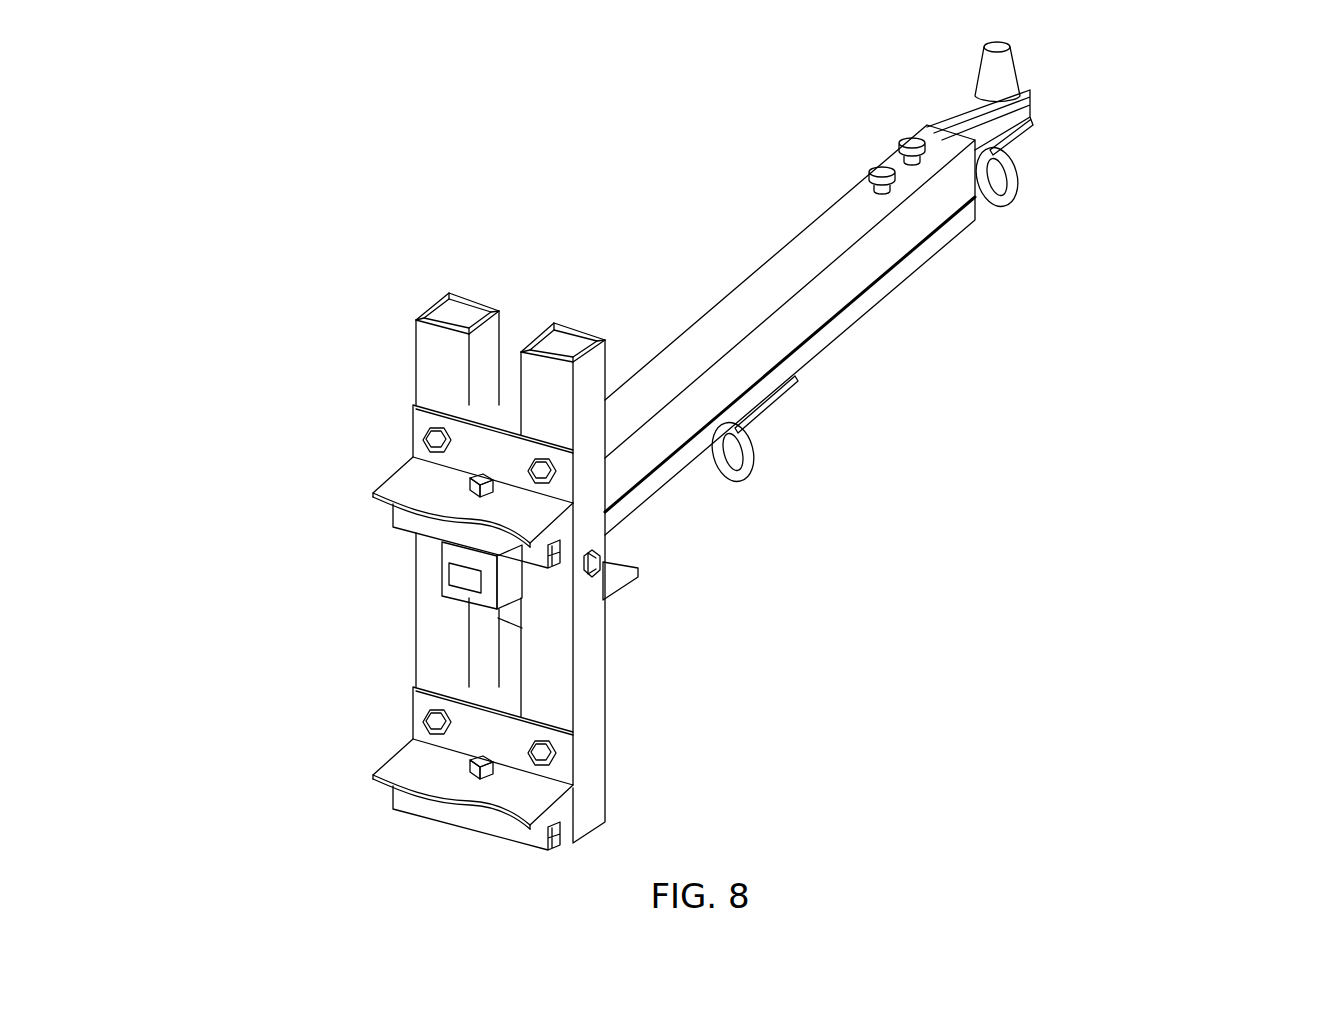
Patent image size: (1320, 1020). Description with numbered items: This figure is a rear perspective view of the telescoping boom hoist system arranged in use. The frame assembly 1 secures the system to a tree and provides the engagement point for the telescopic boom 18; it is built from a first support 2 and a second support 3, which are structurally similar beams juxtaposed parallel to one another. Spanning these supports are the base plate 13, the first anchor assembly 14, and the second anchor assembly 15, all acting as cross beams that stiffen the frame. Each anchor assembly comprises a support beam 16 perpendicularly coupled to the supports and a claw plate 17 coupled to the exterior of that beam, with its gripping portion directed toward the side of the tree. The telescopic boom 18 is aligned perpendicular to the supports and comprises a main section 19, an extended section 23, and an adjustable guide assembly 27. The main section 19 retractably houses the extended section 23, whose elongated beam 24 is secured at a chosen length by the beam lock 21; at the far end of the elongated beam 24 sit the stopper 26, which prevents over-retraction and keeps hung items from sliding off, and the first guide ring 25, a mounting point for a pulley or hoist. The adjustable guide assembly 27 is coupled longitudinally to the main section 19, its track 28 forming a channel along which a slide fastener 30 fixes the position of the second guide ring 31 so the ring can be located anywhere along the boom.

The frame assembly 1 is at (310, 605).
The first support 2 is at (437, 304).
The second support 3 is at (580, 327).
The base plate 13 is at (623, 560).
The first anchor assembly 14 is at (374, 446).
The second anchor assembly 15 is at (400, 722).
The support beam 16 is at (403, 527).
The claw plate 17 is at (384, 492).
The telescopic boom 18 is at (1074, 506).
The main section 19 is at (795, 258).
The beam lock 21 is at (912, 144).
The extended section 23 is at (1142, 110).
The elongated beam 24 is at (960, 110).
The first guide ring 25 is at (1020, 168).
The stopper 26 is at (1020, 74).
The adjustable guide assembly 27 is at (924, 370).
The track 28 is at (912, 266).
The slide fastener 30 is at (786, 382).
The second guide ring 31 is at (754, 440).